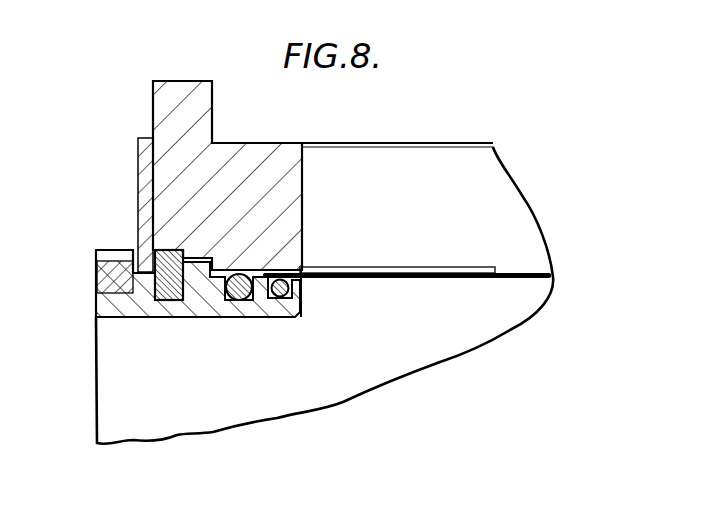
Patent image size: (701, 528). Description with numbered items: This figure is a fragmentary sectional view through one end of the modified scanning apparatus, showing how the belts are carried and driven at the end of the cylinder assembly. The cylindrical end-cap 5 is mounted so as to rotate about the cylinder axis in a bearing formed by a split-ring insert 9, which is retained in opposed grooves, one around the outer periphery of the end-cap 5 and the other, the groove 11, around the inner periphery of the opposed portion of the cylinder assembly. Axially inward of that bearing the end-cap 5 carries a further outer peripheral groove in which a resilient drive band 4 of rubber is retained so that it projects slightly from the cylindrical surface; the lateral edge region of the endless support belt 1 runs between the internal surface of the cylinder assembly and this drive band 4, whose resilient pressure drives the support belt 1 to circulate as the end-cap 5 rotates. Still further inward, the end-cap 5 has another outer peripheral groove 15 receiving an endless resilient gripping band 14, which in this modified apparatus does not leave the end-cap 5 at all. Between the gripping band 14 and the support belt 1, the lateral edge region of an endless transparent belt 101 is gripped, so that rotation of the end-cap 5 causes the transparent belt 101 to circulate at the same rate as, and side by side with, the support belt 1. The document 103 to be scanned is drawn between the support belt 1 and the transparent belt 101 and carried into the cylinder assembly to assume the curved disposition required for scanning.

The support belt 1 is at (434, 262).
The drive band 4 is at (238, 298).
The end-cap 5 is at (460, 330).
The split-ring insert 9 is at (166, 258).
The groove 11 is at (188, 168).
The gripping band 14 is at (282, 296).
The outer peripheral groove 15 is at (296, 300).
The transparent belt 101 is at (513, 281).
The document 103 is at (510, 272).